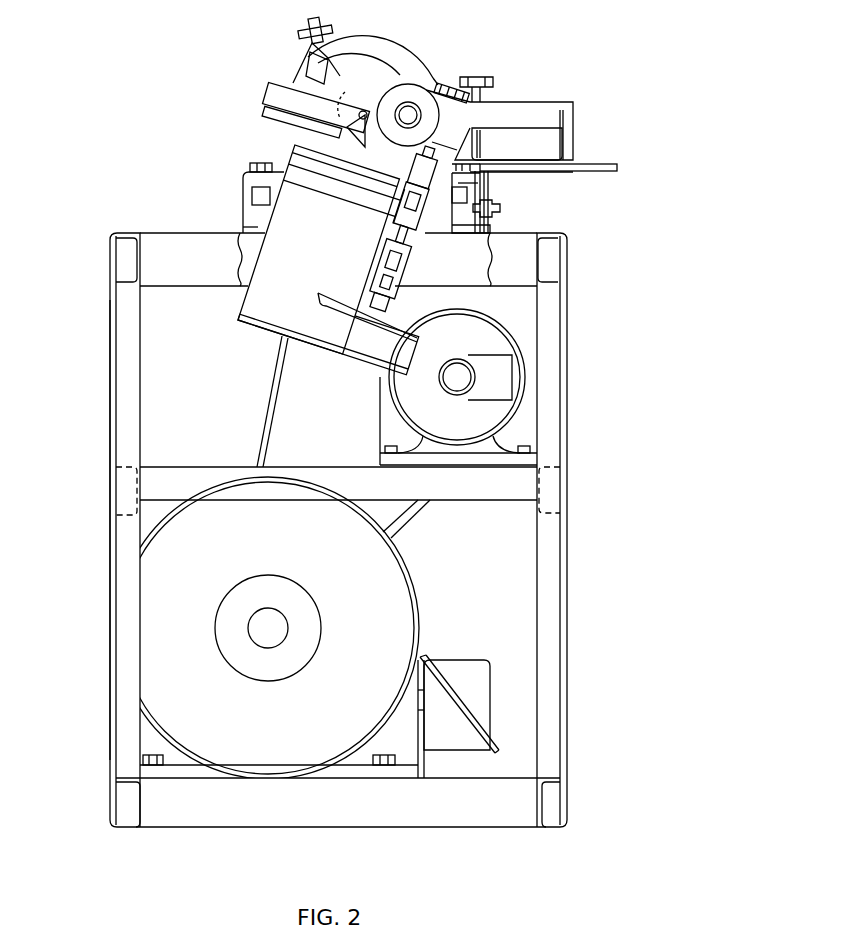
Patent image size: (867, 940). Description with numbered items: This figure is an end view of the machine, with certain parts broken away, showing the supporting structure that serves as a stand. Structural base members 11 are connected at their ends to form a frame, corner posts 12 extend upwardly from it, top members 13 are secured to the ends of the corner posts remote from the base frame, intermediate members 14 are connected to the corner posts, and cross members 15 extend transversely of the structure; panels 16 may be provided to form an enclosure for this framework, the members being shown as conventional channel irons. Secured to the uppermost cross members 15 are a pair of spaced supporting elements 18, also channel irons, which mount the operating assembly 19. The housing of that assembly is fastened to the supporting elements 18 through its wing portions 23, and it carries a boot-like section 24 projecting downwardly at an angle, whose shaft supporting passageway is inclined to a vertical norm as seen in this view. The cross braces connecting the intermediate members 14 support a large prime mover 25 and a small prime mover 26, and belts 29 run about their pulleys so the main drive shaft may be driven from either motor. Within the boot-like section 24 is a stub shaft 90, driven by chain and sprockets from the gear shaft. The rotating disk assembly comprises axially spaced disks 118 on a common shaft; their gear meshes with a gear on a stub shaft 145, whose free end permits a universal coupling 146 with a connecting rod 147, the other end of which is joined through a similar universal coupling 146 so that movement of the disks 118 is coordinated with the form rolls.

The structural base members 11 is at (478, 827).
The corner post 12 is at (537, 612).
The top members 13 is at (182, 292).
The intermediate members 14 is at (548, 485).
The cross members 15 is at (470, 500).
The panels 16 is at (110, 400).
The supporting elements 18 is at (243, 197).
The operating assembly 19 is at (405, 51).
The wing portions 23 is at (349, 266).
The boot-like section 24 is at (246, 298).
The large prime mover 25 is at (272, 552).
The small prime mover 26 is at (458, 388).
The belts 29 is at (270, 403).
The stub shaft 90 is at (393, 318).
The disks 118 is at (422, 86).
The stub shaft 145 is at (413, 157).
The universal coupling 146 is at (495, 226).
The connecting rod 147 is at (405, 247).